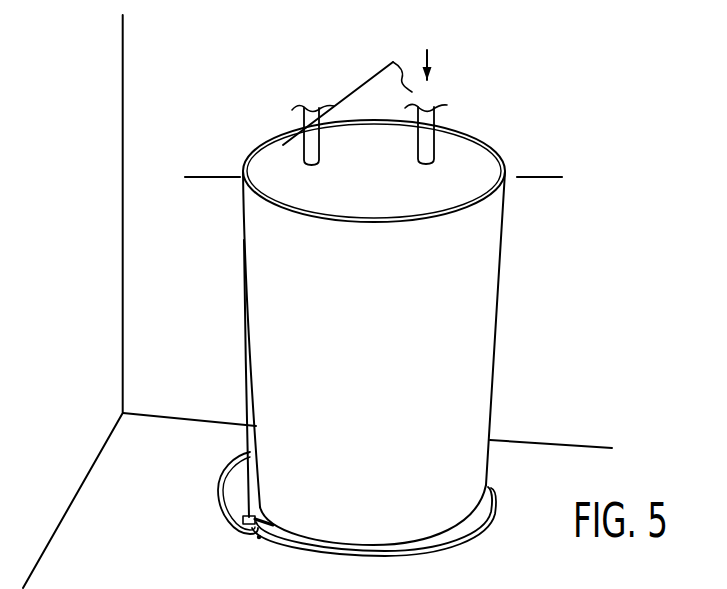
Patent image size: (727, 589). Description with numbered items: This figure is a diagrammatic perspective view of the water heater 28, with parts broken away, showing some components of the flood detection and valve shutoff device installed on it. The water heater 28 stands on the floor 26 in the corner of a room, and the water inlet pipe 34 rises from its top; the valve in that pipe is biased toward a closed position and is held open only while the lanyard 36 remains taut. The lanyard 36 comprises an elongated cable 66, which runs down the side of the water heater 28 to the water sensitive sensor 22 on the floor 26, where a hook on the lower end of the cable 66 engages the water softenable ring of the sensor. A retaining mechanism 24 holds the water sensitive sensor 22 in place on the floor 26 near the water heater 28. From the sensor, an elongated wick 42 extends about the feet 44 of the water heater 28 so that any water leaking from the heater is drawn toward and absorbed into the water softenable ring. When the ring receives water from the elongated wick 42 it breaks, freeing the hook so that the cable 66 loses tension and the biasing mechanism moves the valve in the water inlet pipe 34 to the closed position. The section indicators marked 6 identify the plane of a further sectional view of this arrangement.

The section line 6- 6 is at (203, 184).
The water sensitive sensor 22 is at (214, 492).
The retaining mechanism 24 is at (260, 538).
The floor 26 is at (535, 458).
The water heater 28 is at (483, 350).
The water inlet pipe 34 is at (434, 119).
The lanyard 36 is at (357, 87).
The elongated wick 42 is at (447, 543).
The feet 44 is at (262, 518).
The elongated cable 66 is at (246, 382).